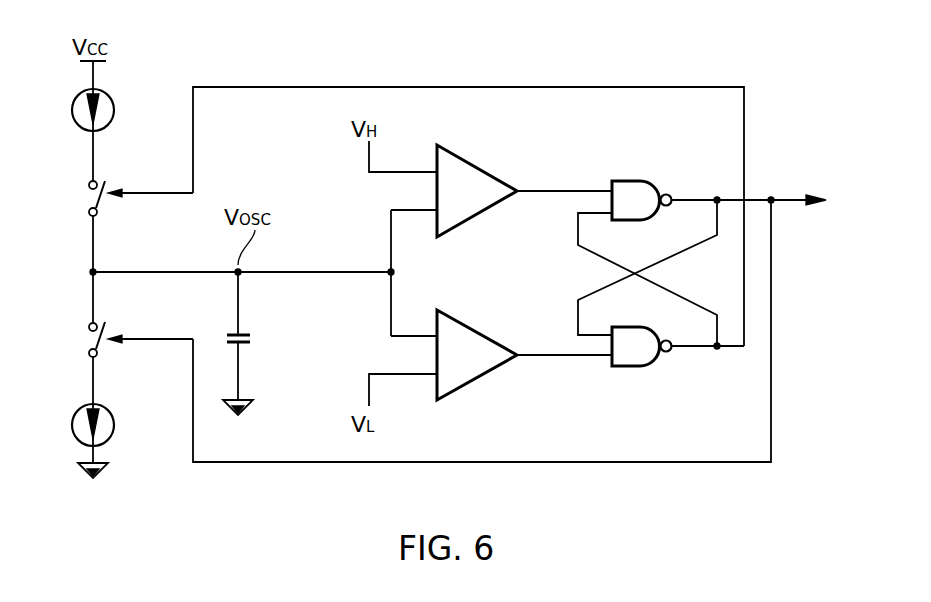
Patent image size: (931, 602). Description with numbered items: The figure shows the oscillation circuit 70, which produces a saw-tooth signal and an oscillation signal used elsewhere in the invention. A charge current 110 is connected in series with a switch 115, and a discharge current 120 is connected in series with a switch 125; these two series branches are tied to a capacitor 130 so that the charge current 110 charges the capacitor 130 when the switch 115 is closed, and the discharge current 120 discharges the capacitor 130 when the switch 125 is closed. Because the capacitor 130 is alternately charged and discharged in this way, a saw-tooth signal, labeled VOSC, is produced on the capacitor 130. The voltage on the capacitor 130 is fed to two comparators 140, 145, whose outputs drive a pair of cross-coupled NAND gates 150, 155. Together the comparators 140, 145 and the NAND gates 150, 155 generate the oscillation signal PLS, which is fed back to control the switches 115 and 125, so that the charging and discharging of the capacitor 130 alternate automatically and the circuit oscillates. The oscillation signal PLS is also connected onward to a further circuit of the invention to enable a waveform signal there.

The oscillation circuit 70 is at (805, 44).
The charge current 110 is at (72, 117).
The switch 115 is at (80, 200).
The discharge current 120 is at (72, 430).
The switch 125 is at (80, 338).
The capacitor 130 is at (252, 338).
The comparator 140 is at (467, 225).
The comparator 145 is at (467, 388).
The NAND gate 150 is at (628, 179).
The NAND gate 155 is at (628, 369).